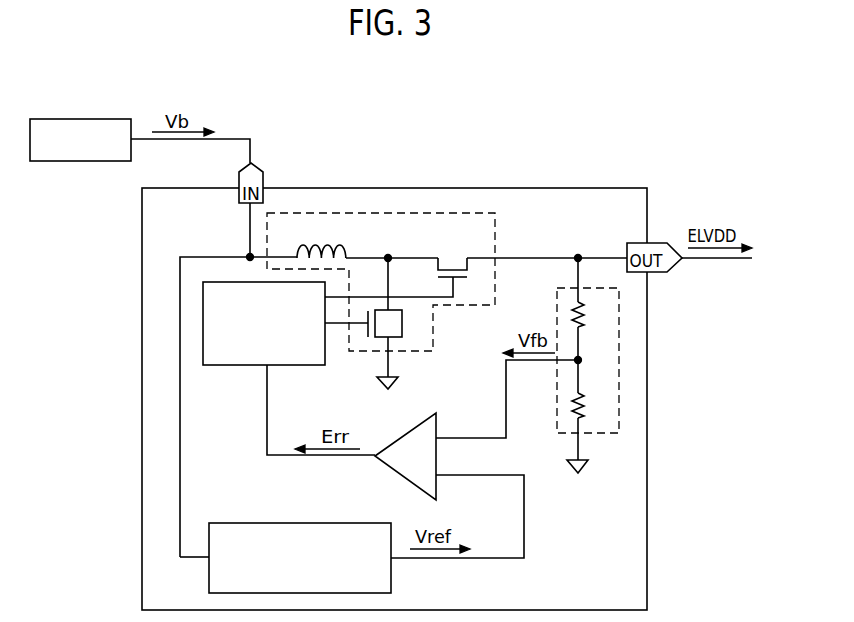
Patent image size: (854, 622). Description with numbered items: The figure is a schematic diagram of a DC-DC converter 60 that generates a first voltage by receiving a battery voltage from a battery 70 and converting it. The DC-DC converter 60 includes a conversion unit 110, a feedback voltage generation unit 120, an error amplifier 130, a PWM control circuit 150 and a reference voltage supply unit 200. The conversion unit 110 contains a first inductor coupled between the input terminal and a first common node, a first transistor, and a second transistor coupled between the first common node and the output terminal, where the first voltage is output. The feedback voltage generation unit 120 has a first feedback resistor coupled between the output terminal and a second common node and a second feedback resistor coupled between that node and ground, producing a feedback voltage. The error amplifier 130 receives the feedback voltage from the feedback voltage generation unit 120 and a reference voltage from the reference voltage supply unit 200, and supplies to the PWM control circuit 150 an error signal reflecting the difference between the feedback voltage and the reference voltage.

The DC-DC converter 60 is at (563, 188).
The battery 70 is at (109, 119).
The conversion unit 110 is at (381, 213).
The feedback voltage generation unit 120 is at (619, 337).
The error amplifier 130 is at (433, 413).
The PWM control circuit 150 is at (238, 368).
The reference voltage supply unit 200 is at (245, 523).